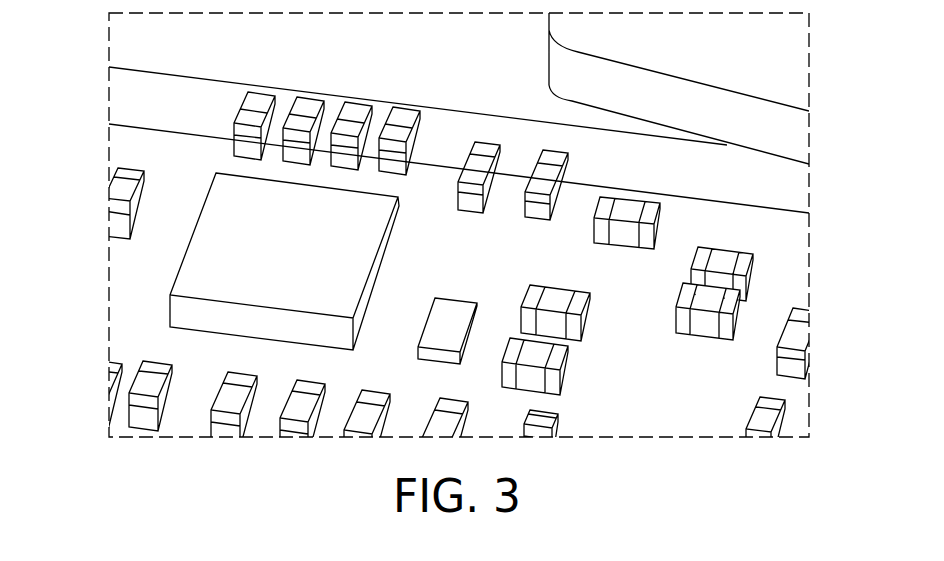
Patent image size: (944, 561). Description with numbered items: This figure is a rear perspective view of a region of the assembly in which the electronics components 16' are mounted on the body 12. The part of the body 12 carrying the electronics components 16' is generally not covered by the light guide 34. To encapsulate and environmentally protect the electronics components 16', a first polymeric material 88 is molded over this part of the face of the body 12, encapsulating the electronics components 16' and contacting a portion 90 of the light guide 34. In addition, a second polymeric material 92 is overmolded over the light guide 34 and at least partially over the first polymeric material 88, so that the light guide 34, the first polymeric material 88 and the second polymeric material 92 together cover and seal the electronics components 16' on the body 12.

The body 12 is at (132, 297).
The electronics components 16' is at (326, 143).
The light guide 34 is at (153, 60).
The first polymeric material 88 is at (123, 270).
The portion of the light guide 90 is at (150, 116).
The second polymeric material 92 is at (765, 128).